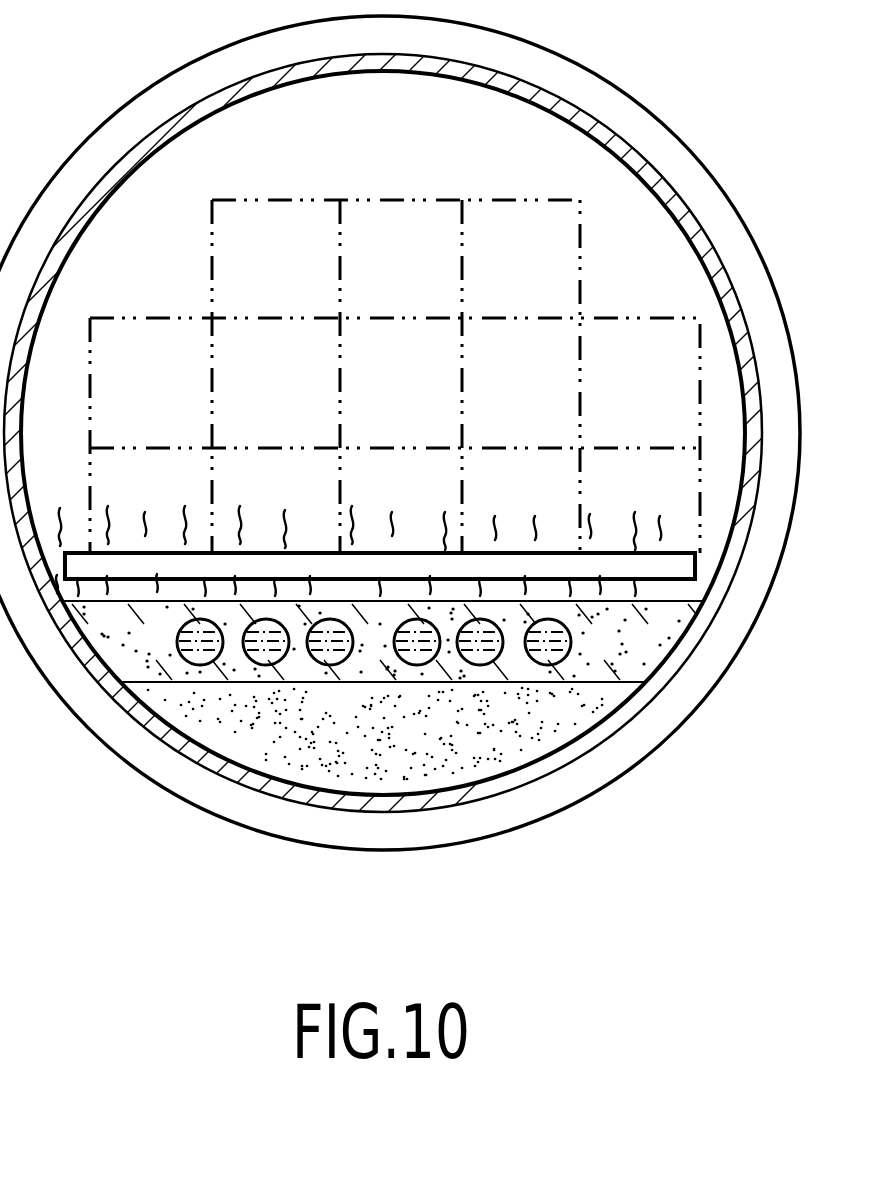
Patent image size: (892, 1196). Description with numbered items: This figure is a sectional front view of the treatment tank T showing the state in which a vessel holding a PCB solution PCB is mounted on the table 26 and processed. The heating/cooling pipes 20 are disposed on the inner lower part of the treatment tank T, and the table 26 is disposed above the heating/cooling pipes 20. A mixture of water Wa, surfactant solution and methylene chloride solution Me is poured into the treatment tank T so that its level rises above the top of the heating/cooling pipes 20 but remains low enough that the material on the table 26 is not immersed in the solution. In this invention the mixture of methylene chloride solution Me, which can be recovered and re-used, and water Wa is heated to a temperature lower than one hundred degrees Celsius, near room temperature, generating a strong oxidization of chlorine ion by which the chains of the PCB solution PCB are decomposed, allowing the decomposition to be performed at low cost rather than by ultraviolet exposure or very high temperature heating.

The treatment tank T is at (133, 153).
The PCB solution PCB is at (227, 273).
The table 26 is at (366, 565).
The water Wa is at (647, 642).
The heating/cooling pipes 20 is at (263, 652).
The methylene chloride solution Me is at (347, 748).